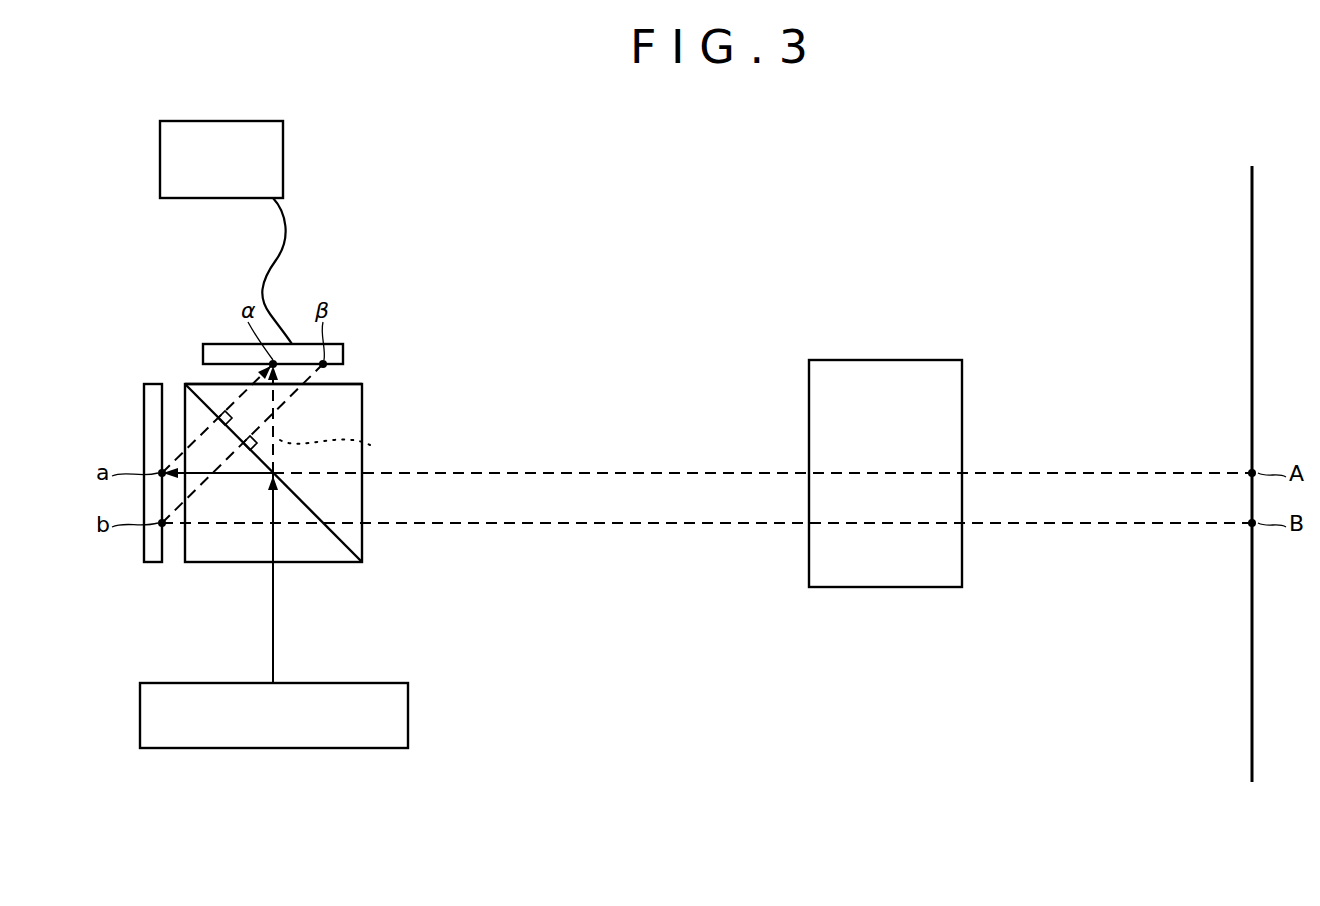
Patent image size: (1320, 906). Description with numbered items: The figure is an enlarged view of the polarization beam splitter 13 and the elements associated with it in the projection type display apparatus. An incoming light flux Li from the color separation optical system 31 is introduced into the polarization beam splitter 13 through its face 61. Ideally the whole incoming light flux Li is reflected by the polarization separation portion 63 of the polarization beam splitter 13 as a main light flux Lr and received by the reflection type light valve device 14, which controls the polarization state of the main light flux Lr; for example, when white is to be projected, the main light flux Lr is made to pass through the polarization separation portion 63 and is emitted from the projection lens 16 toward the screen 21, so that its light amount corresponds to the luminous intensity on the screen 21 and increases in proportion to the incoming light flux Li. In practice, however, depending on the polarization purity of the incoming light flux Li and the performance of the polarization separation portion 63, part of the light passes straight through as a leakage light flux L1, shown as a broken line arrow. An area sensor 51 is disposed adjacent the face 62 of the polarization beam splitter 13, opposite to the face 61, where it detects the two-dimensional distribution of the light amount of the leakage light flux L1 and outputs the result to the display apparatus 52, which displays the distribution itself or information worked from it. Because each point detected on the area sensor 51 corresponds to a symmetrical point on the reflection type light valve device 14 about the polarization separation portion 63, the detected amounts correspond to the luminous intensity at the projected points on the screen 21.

The polarization beam splitter 13 is at (327, 473).
The reflection type light valve device 14 is at (155, 562).
The projection lens 16 is at (885, 360).
The screen 21 is at (1250, 255).
The color separation optical system 31 is at (273, 748).
The area sensor 51 is at (203, 357).
The display apparatus 52 is at (221, 121).
The face 61 is at (332, 562).
The face 62 is at (346, 384).
The polarization separation portion 63 is at (303, 503).
The incoming light flux Li is at (273, 658).
The main light flux Lr is at (232, 477).
The leakage light flux L1 is at (344, 444).